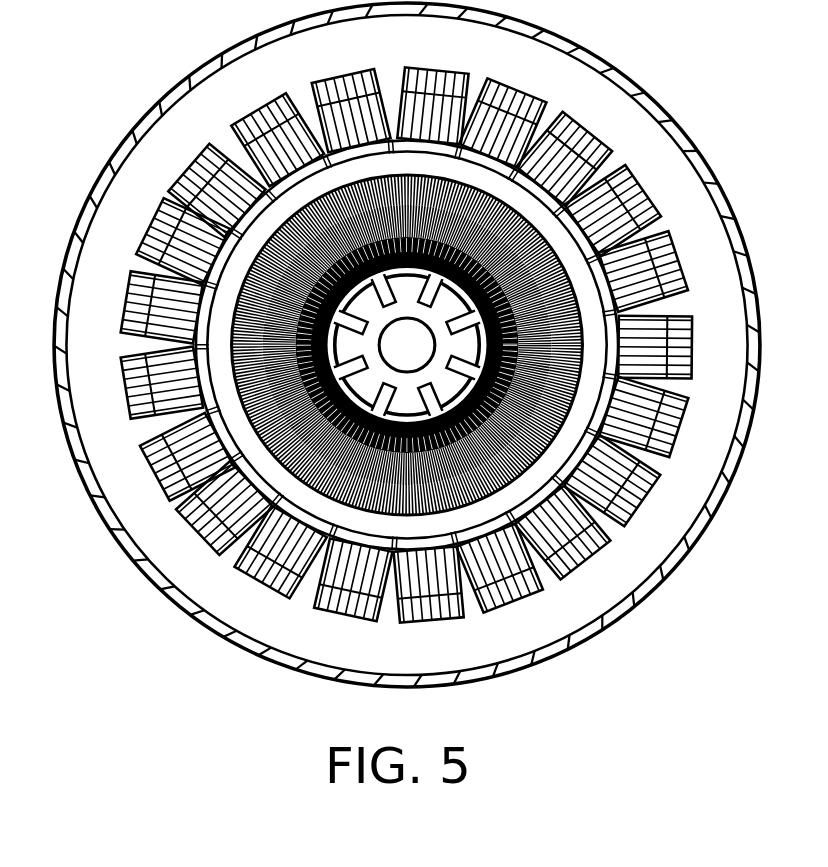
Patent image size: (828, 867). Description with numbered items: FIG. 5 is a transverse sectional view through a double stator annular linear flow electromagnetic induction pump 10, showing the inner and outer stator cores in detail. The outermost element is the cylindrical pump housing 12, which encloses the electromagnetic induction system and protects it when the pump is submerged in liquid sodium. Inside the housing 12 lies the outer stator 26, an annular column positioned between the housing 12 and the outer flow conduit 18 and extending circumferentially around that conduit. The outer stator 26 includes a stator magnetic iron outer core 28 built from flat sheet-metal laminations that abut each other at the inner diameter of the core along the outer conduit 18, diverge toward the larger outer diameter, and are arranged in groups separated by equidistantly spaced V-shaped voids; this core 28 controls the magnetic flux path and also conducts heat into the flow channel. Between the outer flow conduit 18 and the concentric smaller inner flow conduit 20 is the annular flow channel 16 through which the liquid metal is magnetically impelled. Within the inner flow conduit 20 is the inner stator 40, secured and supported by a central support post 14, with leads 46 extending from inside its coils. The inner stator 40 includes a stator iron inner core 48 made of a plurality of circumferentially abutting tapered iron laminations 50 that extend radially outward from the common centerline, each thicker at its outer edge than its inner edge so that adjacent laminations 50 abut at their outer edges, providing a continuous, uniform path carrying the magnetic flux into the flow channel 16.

The electromagnetic induction pump 10 is at (700, 99).
The pump housing 12 is at (712, 152).
The central support post 14 is at (441, 393).
The annular flow channel 16 is at (450, 527).
The outer flow conduit 18 is at (522, 523).
The inner flow conduit 20 is at (540, 480).
The outer stator 26 is at (598, 475).
The stator magnetic iron outer core 28 is at (660, 452).
The inner stator 40 is at (508, 492).
The leads 46 is at (226, 467).
The stator iron inner core 48 is at (545, 383).
The tapered iron laminations 50 is at (470, 296).